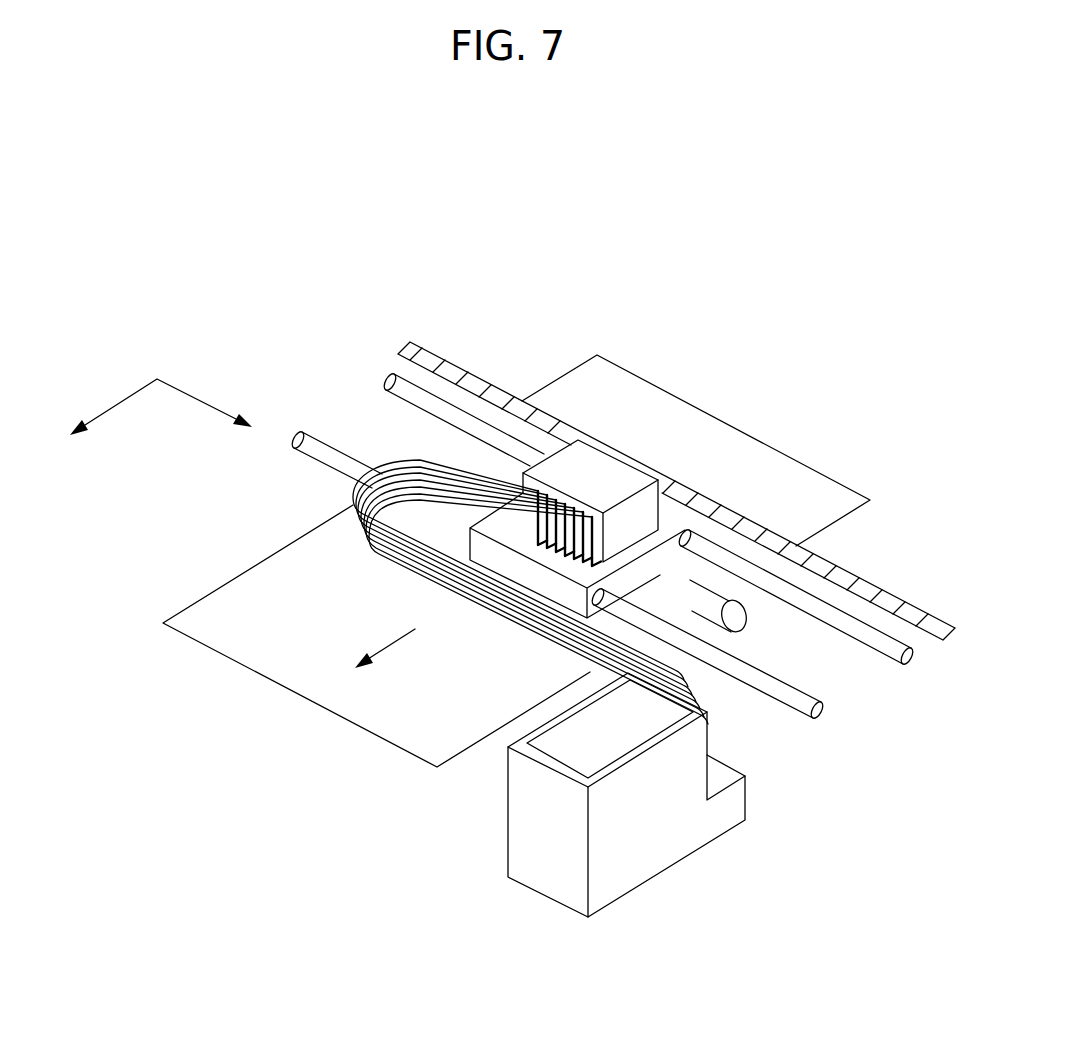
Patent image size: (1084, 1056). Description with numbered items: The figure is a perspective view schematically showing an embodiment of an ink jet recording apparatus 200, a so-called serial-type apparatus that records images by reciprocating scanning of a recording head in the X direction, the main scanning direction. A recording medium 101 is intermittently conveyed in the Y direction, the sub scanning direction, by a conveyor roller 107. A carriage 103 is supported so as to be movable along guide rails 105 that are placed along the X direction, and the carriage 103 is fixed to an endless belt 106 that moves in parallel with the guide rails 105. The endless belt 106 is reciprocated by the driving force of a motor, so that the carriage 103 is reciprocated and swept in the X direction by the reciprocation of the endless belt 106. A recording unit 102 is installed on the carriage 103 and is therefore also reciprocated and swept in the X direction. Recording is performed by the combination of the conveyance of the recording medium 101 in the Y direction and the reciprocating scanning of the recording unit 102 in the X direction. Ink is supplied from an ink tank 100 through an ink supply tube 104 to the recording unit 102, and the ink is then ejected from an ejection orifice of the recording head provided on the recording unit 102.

The ink jet recording apparatus 200 is at (214, 321).
The ink tank 100 is at (520, 800).
The recording medium 101 is at (610, 382).
The recording unit 102 is at (598, 473).
The carriage 103 is at (677, 517).
The ink supply tube 104 is at (368, 544).
The guide rails 105 is at (303, 435).
The endless belt 106 is at (440, 363).
The conveyor roller 107 is at (740, 613).